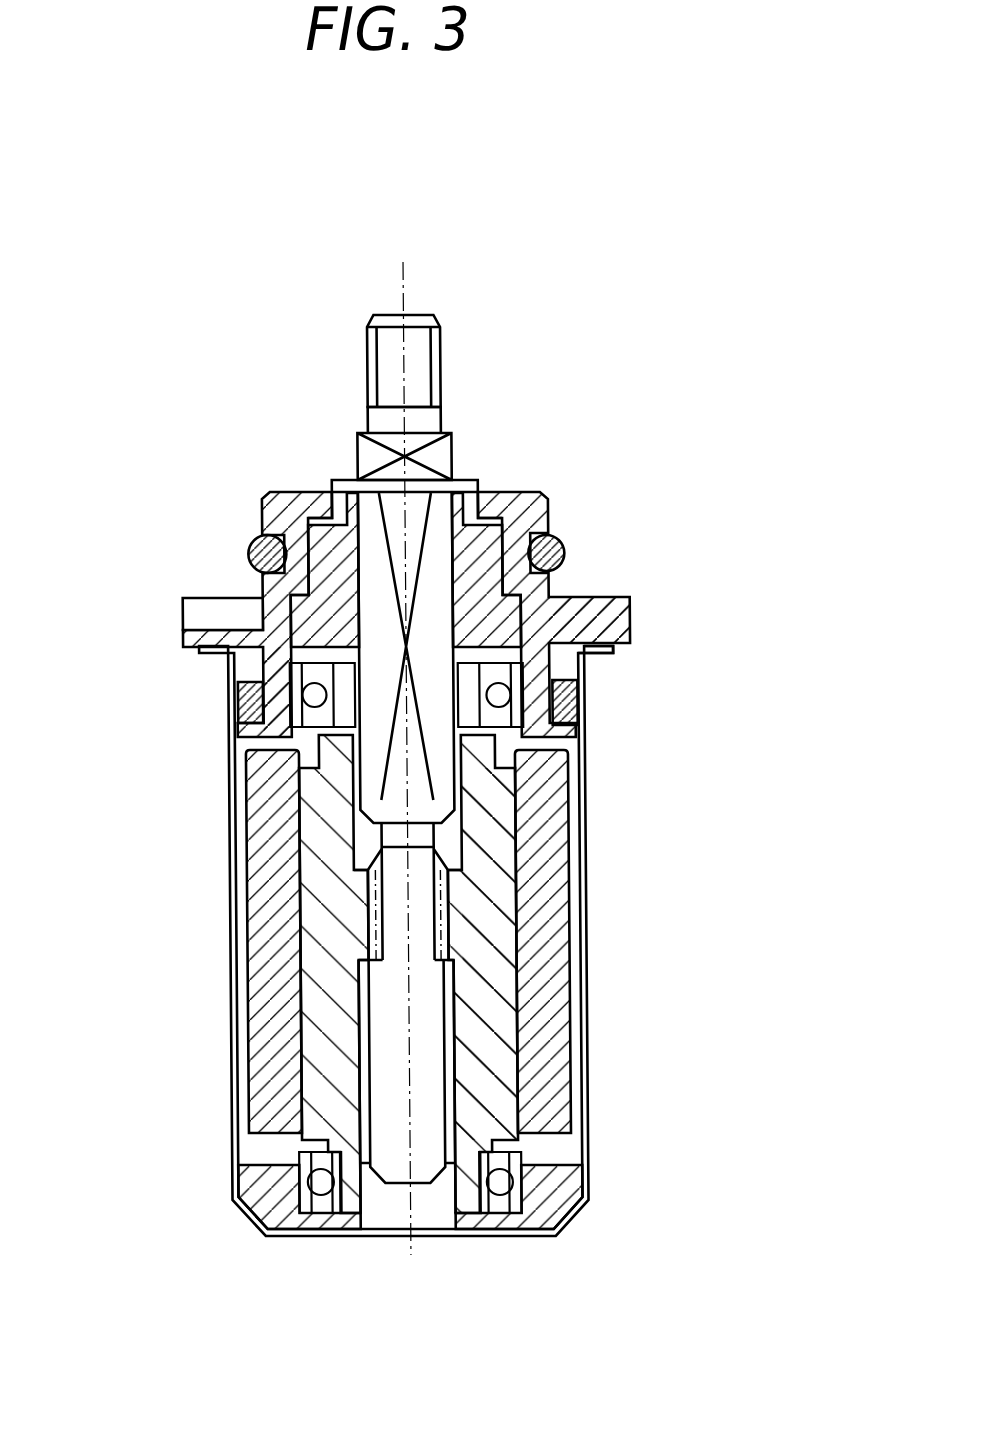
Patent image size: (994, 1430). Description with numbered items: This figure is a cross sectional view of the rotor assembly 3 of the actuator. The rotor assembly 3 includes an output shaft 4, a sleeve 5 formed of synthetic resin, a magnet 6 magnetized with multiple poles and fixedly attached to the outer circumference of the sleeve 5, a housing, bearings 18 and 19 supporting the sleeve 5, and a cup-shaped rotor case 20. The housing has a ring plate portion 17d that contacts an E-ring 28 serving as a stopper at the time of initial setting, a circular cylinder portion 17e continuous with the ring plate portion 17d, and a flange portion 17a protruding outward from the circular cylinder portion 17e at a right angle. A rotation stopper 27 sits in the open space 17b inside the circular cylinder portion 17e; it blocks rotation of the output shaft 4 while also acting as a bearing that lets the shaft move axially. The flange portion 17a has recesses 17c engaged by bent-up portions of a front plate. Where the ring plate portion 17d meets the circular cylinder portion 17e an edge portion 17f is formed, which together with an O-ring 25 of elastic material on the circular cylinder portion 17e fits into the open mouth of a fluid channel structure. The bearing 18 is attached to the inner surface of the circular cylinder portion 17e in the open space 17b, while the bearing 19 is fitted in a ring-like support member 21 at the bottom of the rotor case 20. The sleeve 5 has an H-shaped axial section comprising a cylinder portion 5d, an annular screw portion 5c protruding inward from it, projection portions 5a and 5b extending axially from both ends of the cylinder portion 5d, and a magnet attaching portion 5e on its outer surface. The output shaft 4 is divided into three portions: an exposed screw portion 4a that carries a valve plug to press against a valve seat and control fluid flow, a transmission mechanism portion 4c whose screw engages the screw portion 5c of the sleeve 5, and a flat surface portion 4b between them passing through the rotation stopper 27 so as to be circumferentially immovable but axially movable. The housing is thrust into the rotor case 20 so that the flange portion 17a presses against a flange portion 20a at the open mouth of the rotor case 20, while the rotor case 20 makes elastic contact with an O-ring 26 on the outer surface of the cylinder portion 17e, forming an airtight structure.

The rotor assembly 3 is at (556, 267).
The output shaft 4 is at (475, 791).
The screw portion 4a is at (441, 372).
The flat surface portion 4b is at (409, 640).
The transmission mechanism portion 4c is at (391, 1122).
The sleeve 5 is at (433, 908).
The projection portion 5a is at (563, 578).
The projection portion 5b is at (460, 1190).
The screw portion 5c is at (357, 906).
The cylinder portion 5d is at (482, 857).
The magnet attaching portion 5e is at (502, 968).
The magnet 6 is at (262, 1115).
The flange portion 17a is at (617, 627).
The open space 17b is at (465, 662).
The recess 17c is at (207, 614).
The ring plate portion 17d is at (325, 520).
The circular cylinder portion 17e is at (230, 661).
The edge portion 17f is at (244, 496).
The bearing 18 is at (575, 597).
The bearing 19 is at (495, 1187).
The rotor case 20 is at (578, 775).
The flange portion 20a is at (597, 654).
The ring-like support member 21 is at (545, 1208).
The O-ring 25 is at (251, 544).
The O-ring 26 is at (576, 712).
The rotation stopper 27 is at (291, 510).
The E-ring 28 is at (341, 490).